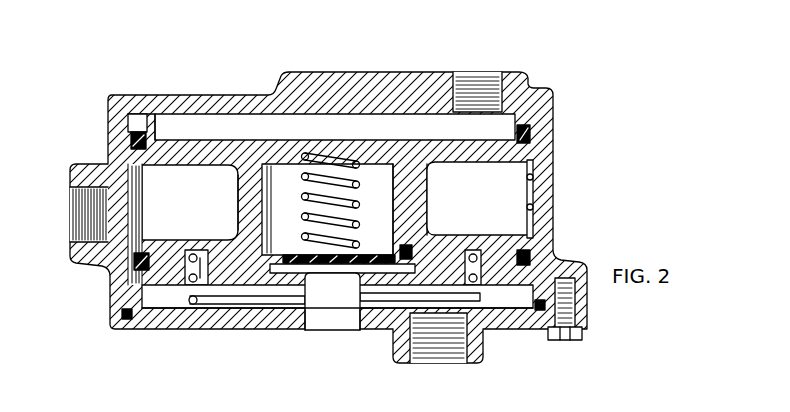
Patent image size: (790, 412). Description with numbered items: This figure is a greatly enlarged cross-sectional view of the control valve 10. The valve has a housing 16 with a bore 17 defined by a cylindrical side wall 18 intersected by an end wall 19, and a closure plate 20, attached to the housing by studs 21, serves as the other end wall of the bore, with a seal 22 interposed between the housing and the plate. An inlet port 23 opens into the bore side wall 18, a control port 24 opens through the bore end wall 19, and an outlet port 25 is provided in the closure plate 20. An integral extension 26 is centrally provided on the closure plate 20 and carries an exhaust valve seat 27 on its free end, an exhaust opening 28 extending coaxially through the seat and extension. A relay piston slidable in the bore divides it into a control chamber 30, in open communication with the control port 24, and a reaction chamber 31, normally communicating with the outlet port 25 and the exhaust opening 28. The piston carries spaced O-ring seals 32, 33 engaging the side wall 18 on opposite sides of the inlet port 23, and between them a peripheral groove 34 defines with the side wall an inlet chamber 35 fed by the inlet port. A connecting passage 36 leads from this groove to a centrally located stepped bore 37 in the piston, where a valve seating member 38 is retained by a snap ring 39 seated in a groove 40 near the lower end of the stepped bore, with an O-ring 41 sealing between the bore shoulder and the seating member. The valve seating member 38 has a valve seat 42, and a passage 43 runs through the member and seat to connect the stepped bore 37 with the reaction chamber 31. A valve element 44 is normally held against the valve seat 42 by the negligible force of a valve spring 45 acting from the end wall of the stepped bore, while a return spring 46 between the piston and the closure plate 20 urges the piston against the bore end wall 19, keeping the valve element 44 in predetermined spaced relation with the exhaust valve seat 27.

The control valve 10 is at (615, 95).
The housing 16 is at (545, 151).
The bore 17 is at (532, 182).
The cylindrical side wall 18 is at (532, 210).
The end wall 19 is at (180, 112).
The closure plate 20 is at (168, 324).
The studs 21 is at (585, 333).
The seal 22 is at (128, 321).
The inlet port 23 is at (80, 236).
The control port 24 is at (497, 76).
The outlet port 25 is at (458, 356).
The integral extension 26 is at (308, 312).
The exhaust valve seat 27 is at (328, 272).
The exhaust opening 28 is at (356, 328).
The control chamber 30 is at (248, 126).
The reaction chamber 31 is at (140, 296).
The O-ring seal 32 is at (131, 140).
The O-ring seal 33 is at (133, 263).
The peripheral groove 34 is at (209, 164).
The inlet chamber 35 is at (180, 222).
The connecting passage 36 is at (246, 232).
The stepped bore 37 is at (392, 188).
The valve seating member 38 is at (402, 268).
The snap ring 39 is at (378, 280).
The groove 40 is at (258, 280).
The O-ring 41 is at (405, 245).
The valve seat 42 is at (368, 256).
The passage 43 is at (300, 289).
The valve element 44 is at (300, 257).
The valve spring 45 is at (305, 183).
The return spring 46 is at (478, 288).